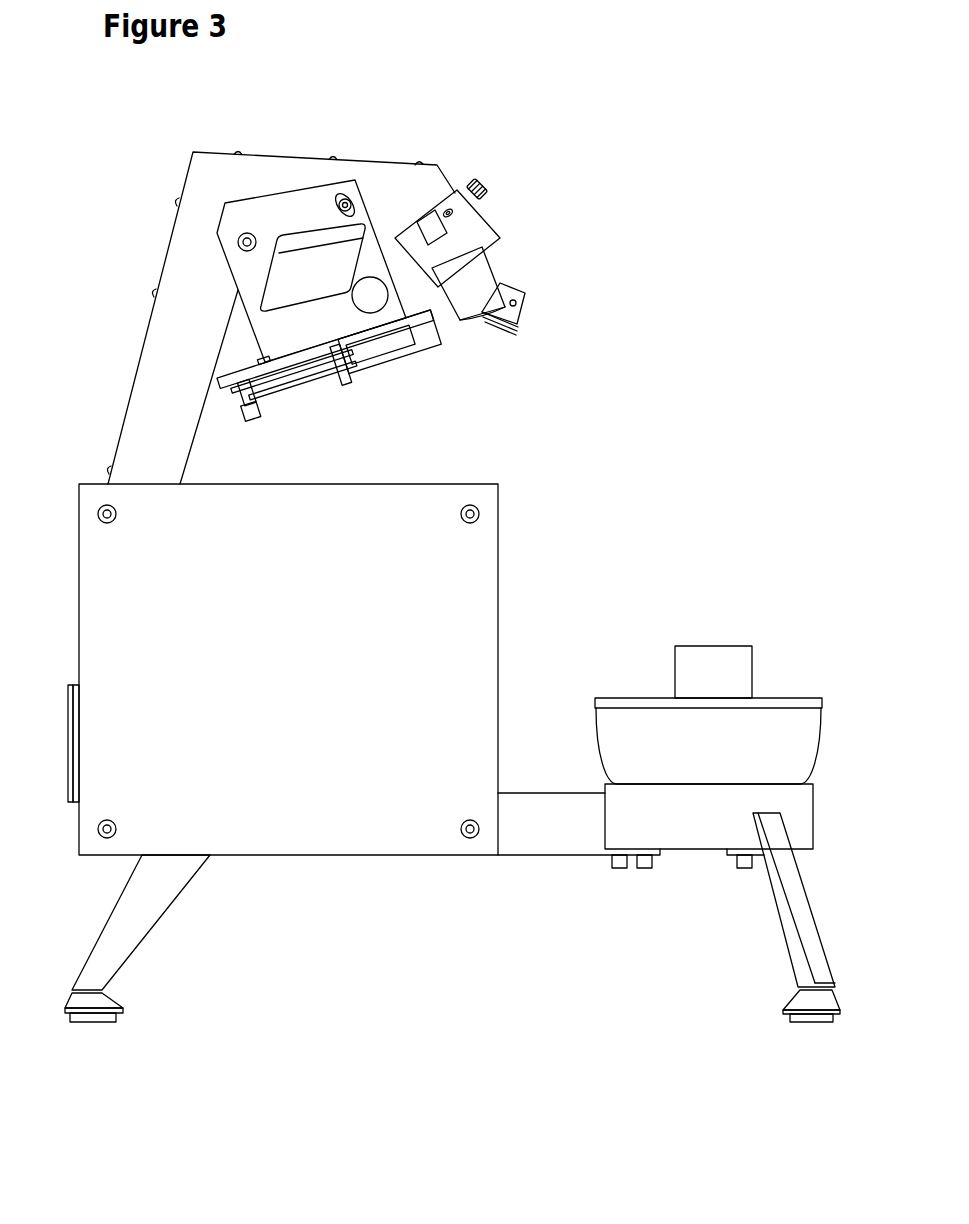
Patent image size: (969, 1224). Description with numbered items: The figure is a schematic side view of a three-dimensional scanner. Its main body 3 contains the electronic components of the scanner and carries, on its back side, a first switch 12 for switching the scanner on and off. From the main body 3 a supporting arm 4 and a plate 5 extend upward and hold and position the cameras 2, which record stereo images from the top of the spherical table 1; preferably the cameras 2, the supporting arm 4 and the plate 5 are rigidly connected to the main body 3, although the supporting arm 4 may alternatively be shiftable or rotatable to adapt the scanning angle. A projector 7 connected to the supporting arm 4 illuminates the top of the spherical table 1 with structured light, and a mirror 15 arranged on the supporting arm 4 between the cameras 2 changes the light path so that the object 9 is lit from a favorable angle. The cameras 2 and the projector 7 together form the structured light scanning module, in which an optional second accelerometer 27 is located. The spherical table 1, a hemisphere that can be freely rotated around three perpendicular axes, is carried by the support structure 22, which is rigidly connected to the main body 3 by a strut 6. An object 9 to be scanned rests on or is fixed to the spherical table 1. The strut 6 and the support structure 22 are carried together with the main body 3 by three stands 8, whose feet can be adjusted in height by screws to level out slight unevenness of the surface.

The spherical table 1 is at (800, 750).
The cameras 2 is at (482, 280).
The main body 3 is at (268, 818).
The supporting arm 4 is at (292, 170).
The plate 5 is at (477, 218).
The strut 6 is at (545, 845).
The projector 7 is at (262, 348).
The stands 8 is at (107, 1000).
The object 9 is at (711, 660).
The first switch 12 is at (68, 780).
The mirror 15 is at (524, 294).
The support structure 22 is at (715, 830).
The second accelerometer 27 is at (443, 210).